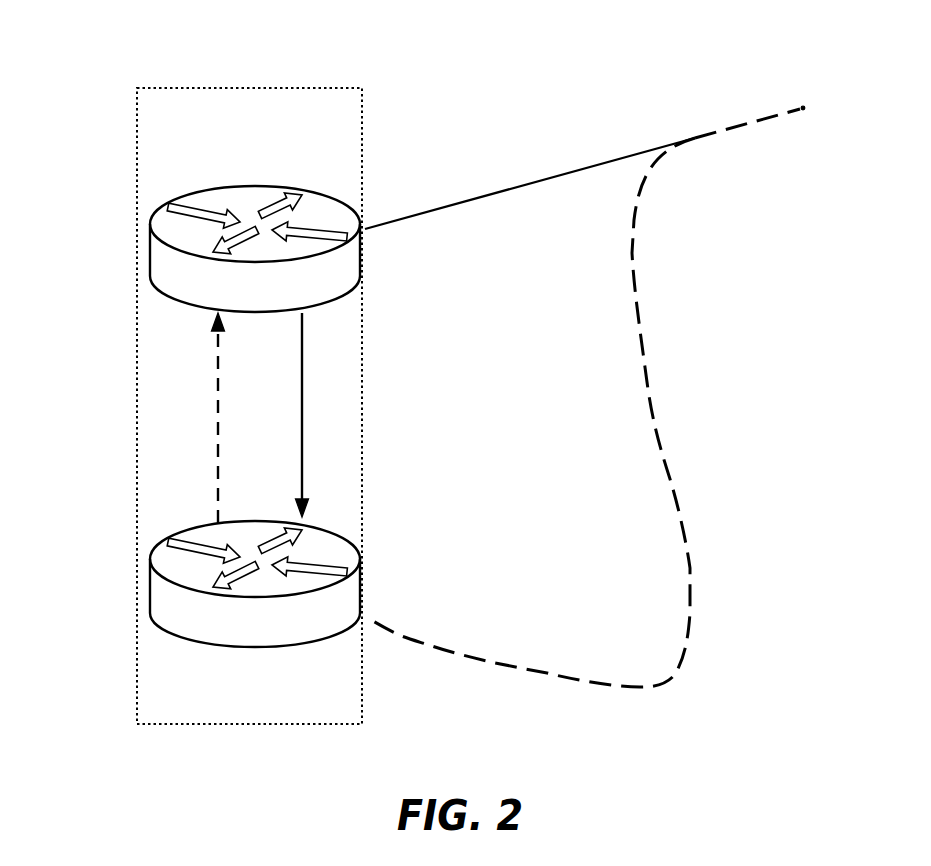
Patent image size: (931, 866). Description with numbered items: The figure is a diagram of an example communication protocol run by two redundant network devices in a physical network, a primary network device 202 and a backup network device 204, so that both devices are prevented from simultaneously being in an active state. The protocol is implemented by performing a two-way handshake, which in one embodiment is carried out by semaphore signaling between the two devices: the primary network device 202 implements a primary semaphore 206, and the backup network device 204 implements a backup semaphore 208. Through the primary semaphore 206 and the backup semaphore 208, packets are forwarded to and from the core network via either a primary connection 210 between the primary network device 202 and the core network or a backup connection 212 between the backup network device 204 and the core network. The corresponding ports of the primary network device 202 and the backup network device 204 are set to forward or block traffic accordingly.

The primary network device 202 is at (272, 120).
The backup network device 204 is at (252, 708).
The primary semaphore 206 is at (362, 373).
The backup semaphore 208 is at (168, 412).
The primary connection 210 is at (552, 123).
The backup connection 212 is at (539, 632).